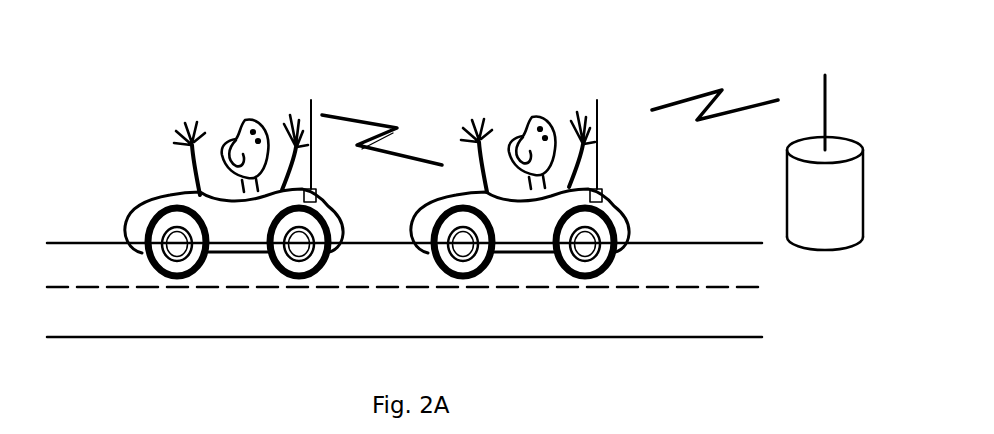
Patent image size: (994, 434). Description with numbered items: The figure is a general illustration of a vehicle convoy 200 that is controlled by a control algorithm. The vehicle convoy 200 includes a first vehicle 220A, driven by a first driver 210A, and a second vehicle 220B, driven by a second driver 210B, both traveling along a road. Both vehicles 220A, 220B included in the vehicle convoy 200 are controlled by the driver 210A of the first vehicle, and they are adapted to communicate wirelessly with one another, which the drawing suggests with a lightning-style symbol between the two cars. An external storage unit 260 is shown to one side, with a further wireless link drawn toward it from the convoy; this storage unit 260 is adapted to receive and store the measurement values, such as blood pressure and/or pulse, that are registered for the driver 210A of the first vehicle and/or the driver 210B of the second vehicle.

The vehicle convoy 200 is at (638, 80).
The first driver 210A is at (247, 120).
The second driver 210B is at (536, 119).
The first vehicle 220A is at (238, 233).
The second vehicle 220B is at (527, 233).
The external storage unit 260 is at (846, 218).